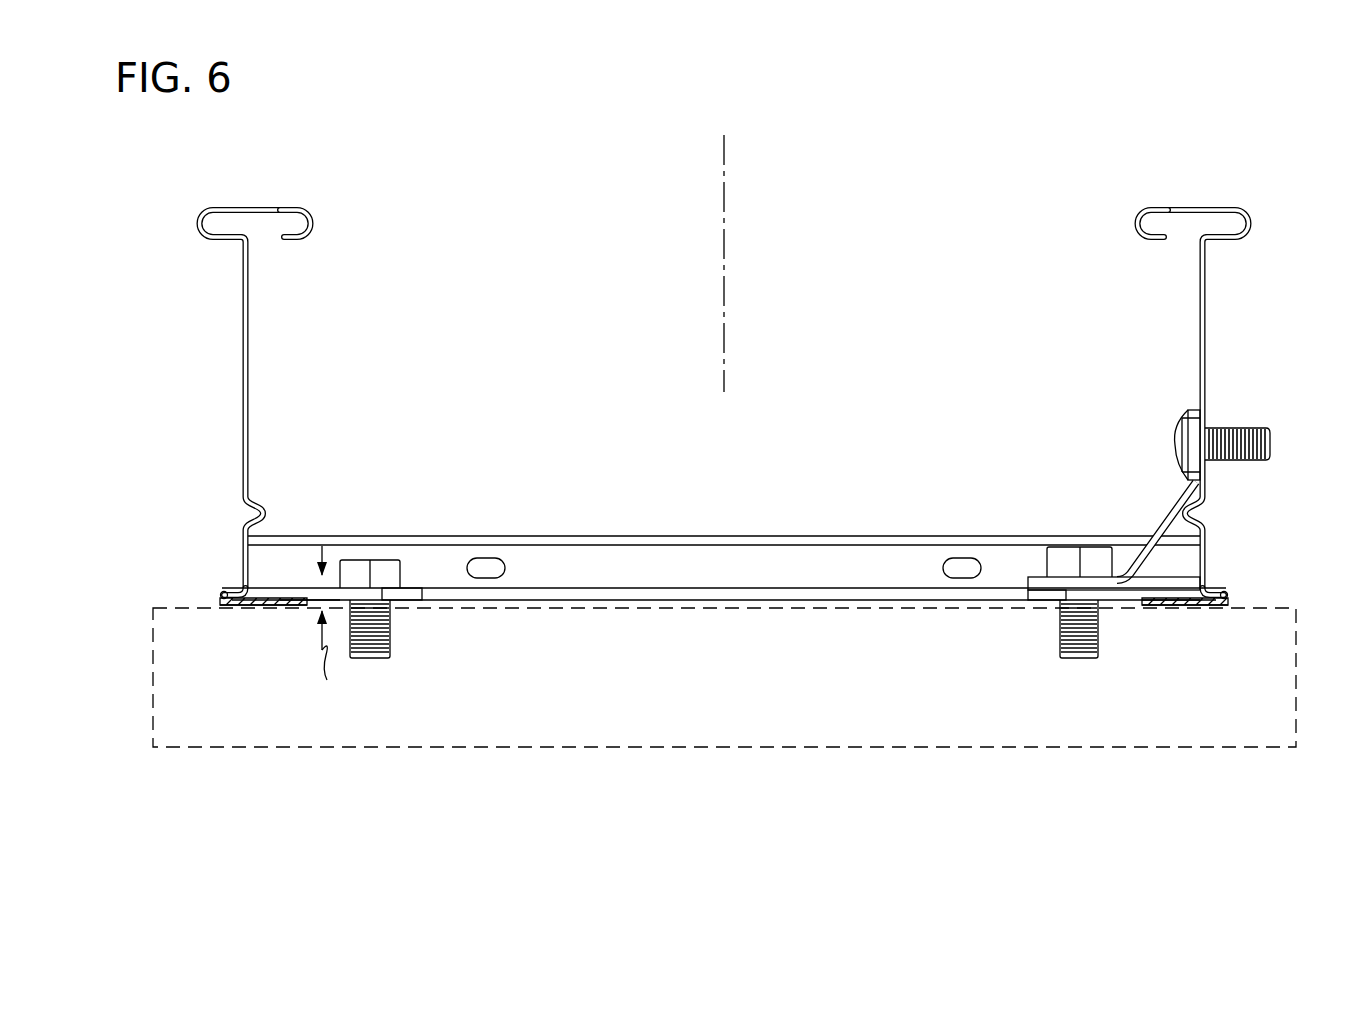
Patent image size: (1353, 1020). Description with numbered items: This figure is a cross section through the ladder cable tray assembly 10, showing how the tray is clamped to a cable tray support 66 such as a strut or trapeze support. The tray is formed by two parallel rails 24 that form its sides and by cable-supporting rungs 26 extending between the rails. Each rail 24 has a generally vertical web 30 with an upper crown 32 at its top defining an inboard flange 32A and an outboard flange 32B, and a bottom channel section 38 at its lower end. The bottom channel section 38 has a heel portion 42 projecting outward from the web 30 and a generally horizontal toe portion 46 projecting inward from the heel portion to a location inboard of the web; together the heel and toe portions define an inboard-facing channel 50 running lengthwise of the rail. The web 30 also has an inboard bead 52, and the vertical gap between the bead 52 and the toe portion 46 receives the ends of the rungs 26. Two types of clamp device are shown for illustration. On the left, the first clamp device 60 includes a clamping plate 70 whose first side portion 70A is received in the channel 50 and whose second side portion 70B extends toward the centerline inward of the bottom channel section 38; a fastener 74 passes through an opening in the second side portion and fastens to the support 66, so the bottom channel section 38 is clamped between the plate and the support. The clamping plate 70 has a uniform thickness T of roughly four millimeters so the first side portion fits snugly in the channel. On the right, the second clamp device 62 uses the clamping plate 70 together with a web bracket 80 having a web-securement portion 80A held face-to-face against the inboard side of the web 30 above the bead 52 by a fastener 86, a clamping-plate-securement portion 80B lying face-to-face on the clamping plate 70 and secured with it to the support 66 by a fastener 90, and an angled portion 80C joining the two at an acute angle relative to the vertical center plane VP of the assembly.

The cable tray assembly 10 is at (947, 156).
The rail 24 is at (238, 297).
The cable-supporting rung 26 is at (700, 545).
The web 30 is at (243, 406).
The upper crown 32 is at (255, 207).
The inboard flange 32A is at (318, 224).
The outboard flange 32B is at (205, 216).
The bottom channel section 38 is at (268, 610).
The heel portion 42 is at (232, 585).
The toe portion 46 is at (294, 606).
The channel 50 is at (226, 590).
The bead 52 is at (265, 512).
The first clamp device 60 is at (300, 548).
The second clamp device 62 is at (1111, 511).
The cable tray support 66 is at (720, 750).
The clamping plate 70 is at (273, 597).
The first side portion 70A is at (240, 607).
The second side portion 70B is at (410, 600).
The fastener 74 is at (385, 572).
The web bracket 80 is at (1111, 487).
The web-securement portion 80A is at (1196, 416).
The clamping-plate-securement portion 80B is at (1035, 580).
The angled portion 80C is at (1168, 522).
The fastener 86 is at (1178, 432).
The fastener 90 is at (1068, 560).
The vertical center plane VP is at (724, 152).
The thickness T is at (329, 627).